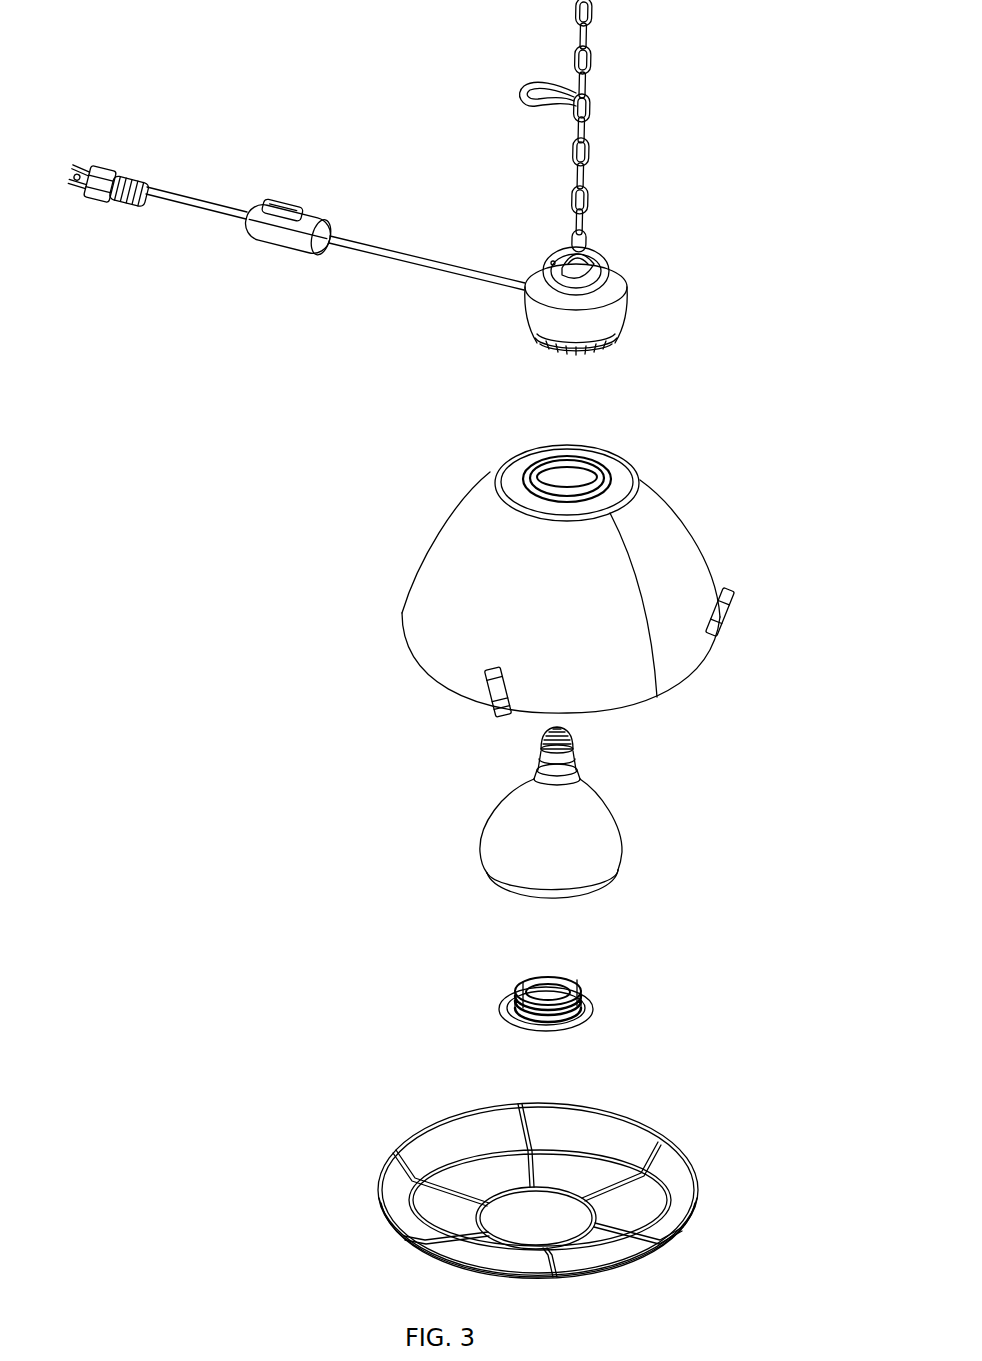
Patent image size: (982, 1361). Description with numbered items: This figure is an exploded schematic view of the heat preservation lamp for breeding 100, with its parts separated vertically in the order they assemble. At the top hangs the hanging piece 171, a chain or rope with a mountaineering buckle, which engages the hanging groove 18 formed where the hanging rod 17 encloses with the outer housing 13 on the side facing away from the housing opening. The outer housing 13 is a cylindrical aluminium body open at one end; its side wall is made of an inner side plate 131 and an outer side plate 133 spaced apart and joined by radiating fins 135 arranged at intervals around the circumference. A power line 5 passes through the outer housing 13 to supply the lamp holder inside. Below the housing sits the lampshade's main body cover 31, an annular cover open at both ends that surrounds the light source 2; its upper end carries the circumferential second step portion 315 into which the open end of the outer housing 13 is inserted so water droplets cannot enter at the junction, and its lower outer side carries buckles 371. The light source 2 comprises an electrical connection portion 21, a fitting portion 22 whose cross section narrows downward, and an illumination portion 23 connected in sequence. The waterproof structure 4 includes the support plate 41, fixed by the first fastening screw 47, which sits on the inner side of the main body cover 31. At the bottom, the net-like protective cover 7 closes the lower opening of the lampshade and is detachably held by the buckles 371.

The heat preservation lamp for breeding 100 is at (419, 62).
The hanging piece 171 is at (590, 171).
The hanging rod 17 is at (603, 262).
The hanging groove 18 is at (550, 260).
The outer housing 13 is at (565, 340).
The outer side plate 133 is at (523, 313).
The inner side plate 131 is at (531, 352).
The radiating fins 135 is at (566, 352).
The power line 5 is at (404, 263).
The main body cover 31 is at (587, 591).
The second step portion 315 is at (515, 489).
The buckle 371 is at (484, 712).
The light source 2 is at (593, 812).
The electrical connection portion 21 is at (575, 746).
The fitting portion 22 is at (583, 779).
The illumination portion 23 is at (579, 838).
The waterproof structure 4 is at (562, 992).
The first fastening screw 47 is at (523, 982).
The support plate 41 is at (503, 1012).
The protective cover 7 is at (416, 1138).